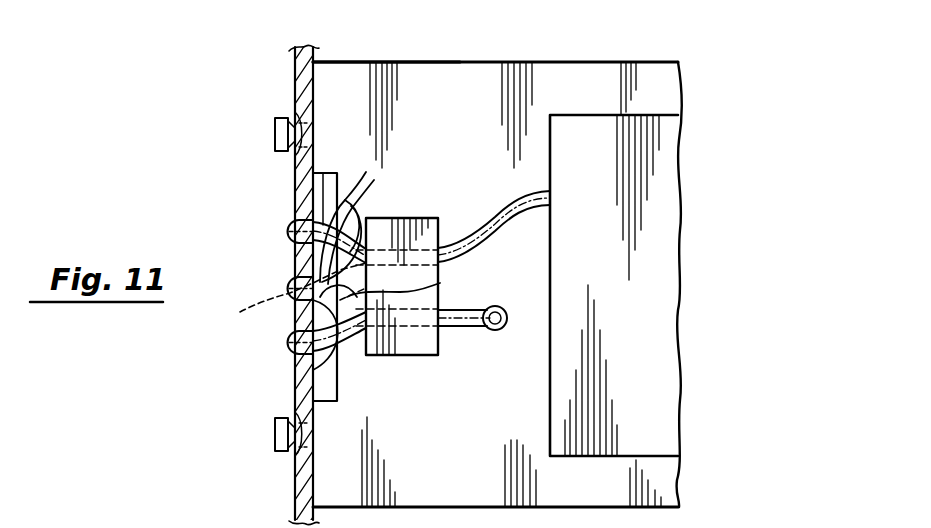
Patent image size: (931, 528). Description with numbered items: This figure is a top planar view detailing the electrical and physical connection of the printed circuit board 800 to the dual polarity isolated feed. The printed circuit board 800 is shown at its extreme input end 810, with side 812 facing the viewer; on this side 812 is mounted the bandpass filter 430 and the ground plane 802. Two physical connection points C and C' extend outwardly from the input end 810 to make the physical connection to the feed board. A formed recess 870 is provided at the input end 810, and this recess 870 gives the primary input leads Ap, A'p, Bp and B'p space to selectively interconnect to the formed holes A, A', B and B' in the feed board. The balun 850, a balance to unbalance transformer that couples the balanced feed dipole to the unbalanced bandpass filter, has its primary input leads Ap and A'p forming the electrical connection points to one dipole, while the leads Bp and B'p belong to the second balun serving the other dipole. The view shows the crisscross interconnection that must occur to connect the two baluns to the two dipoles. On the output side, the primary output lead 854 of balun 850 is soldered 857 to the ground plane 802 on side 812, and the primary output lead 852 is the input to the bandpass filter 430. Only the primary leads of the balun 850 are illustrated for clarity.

The printed circuit board 800 is at (619, 60).
The ground plane 802 is at (522, 320).
The input end 810 is at (350, 62).
The side 812 is at (463, 107).
The balun 850 is at (390, 228).
The primary output lead 852 is at (507, 220).
The primary output lead 854 is at (460, 327).
The solder 857 is at (507, 331).
The recess 870 is at (327, 401).
The bandpass filter 430 is at (657, 313).
The formed hole A is at (263, 215).
The formed hole B is at (263, 267).
The formed hole A' is at (263, 350).
The formed hole B' is at (289, 316).
The physical connection point C is at (257, 114).
The physical connection point C' is at (257, 438).
The primary input lead Ap is at (322, 175).
The primary input lead Bp is at (368, 188).
The primary input lead A'p is at (364, 360).
The primary input lead B'p is at (424, 291).